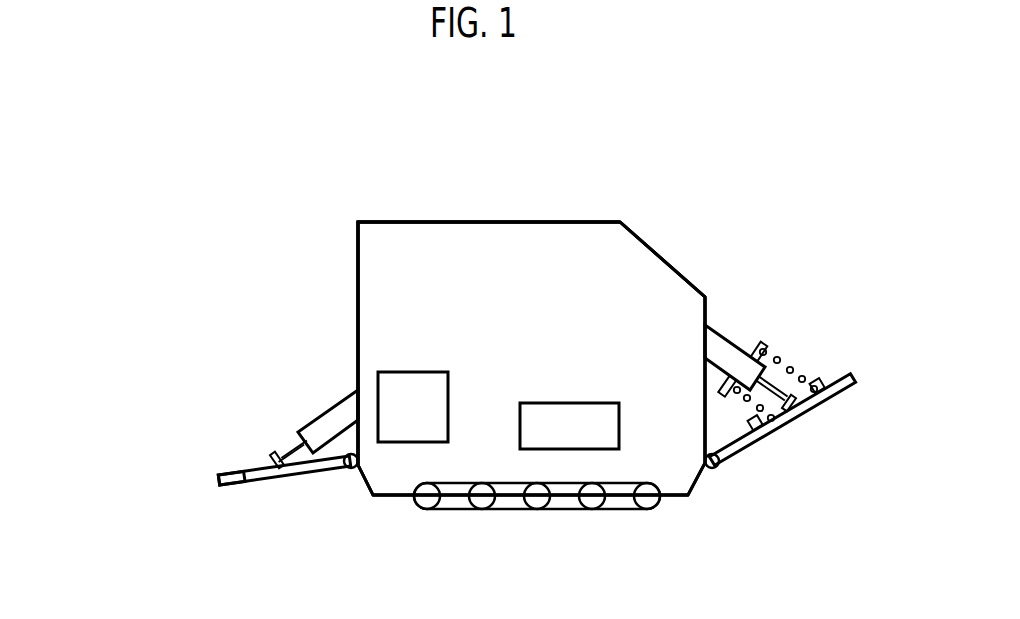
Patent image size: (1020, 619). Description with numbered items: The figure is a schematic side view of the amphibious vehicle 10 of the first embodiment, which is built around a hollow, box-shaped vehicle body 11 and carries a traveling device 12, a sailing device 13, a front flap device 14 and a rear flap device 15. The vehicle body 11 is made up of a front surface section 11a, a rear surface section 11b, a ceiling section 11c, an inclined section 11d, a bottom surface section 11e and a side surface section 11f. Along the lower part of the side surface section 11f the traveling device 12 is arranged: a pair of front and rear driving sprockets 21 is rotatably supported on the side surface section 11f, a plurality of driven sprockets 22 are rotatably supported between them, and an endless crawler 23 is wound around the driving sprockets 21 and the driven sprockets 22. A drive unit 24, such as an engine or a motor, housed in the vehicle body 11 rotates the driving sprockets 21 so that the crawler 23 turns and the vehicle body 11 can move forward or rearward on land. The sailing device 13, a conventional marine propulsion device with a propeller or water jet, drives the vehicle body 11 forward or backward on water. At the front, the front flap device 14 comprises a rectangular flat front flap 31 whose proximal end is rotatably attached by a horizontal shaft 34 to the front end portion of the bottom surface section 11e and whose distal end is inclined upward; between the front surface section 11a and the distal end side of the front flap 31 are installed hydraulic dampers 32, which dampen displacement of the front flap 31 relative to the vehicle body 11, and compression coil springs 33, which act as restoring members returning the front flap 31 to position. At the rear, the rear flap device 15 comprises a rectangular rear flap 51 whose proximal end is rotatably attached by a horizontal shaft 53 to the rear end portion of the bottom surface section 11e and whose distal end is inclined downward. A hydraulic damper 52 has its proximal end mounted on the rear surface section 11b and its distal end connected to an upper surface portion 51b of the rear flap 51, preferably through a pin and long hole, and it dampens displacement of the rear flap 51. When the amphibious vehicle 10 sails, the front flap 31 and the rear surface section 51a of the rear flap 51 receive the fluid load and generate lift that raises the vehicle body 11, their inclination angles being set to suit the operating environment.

The amphibious vehicle 10 is at (305, 198).
The vehicle body 11 is at (540, 212).
The front surface section 11a is at (713, 298).
The rear surface section 11b is at (358, 273).
The ceiling section 11c is at (472, 222).
The inclined section 11d is at (630, 227).
The bottom surface section 11e is at (388, 497).
The side surface section 11f is at (410, 262).
The traveling device 12 is at (598, 545).
The sailing device 13 is at (371, 365).
The front flap device 14 is at (798, 374).
The rear flap device 15 is at (236, 484).
The driving sprocket 21 is at (425, 502).
The driven sprocket 22 is at (475, 502).
The endless crawler 23 is at (567, 510).
The drive unit 24 is at (565, 403).
The front flap 31 is at (829, 394).
The hydraulic damper 32 is at (723, 342).
The compression coil spring 33 is at (803, 372).
The horizontal shaft 34 is at (722, 468).
The rear flap 51 is at (248, 487).
The rear surface section of rear flap 51a is at (290, 477).
The upper surface portion of rear flap 51b is at (242, 470).
The hydraulic damper 52 is at (328, 422).
The horizontal shaft 53 is at (355, 467).